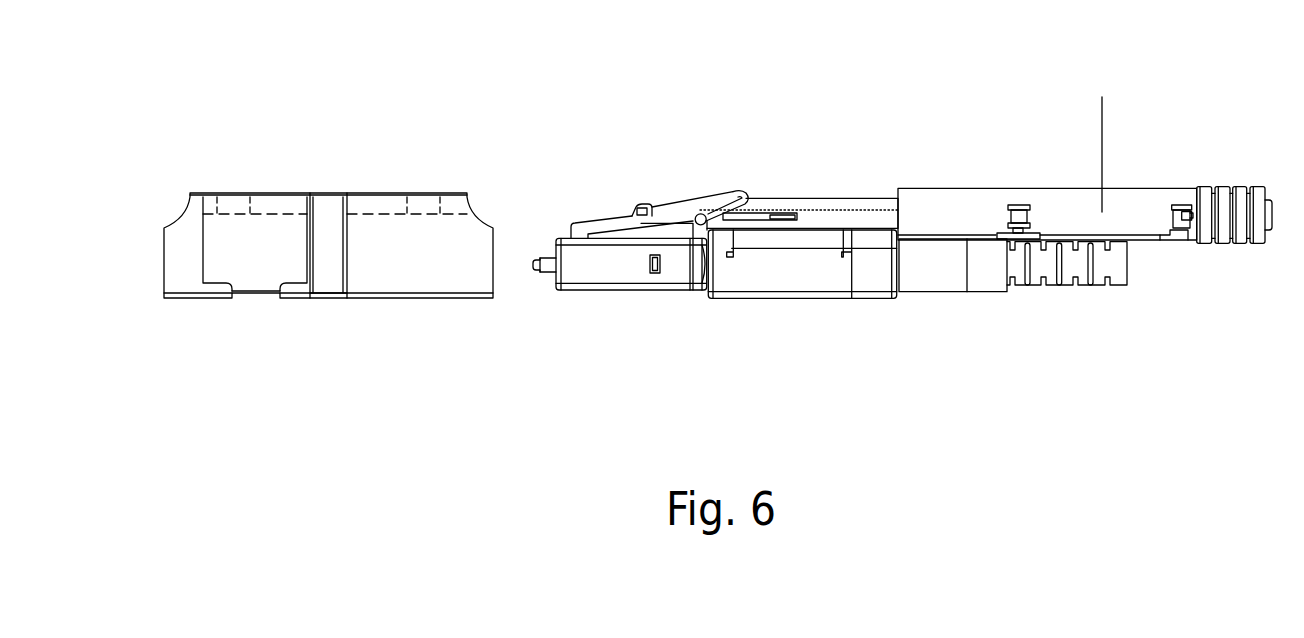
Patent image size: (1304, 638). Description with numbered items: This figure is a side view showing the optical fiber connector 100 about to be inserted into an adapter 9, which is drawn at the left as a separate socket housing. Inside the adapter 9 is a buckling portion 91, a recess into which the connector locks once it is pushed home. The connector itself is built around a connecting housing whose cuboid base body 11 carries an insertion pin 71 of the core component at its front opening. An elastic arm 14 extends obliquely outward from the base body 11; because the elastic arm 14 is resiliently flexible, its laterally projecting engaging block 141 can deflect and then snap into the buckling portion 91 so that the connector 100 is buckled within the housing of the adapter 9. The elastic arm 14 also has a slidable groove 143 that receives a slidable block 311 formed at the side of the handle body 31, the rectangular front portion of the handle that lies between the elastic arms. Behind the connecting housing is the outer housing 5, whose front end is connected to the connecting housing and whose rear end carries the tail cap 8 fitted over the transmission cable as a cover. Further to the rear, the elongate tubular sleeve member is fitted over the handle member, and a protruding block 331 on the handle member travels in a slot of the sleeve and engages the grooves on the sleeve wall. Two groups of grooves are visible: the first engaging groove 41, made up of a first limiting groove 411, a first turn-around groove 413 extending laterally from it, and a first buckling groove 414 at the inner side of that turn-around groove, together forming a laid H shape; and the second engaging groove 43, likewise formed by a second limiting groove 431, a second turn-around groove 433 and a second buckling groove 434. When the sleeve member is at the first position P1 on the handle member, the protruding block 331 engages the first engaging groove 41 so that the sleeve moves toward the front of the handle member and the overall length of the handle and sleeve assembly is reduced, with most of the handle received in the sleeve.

The optical fiber connector 100 is at (853, 72).
The adapter 9 is at (327, 218).
The buckling portion 91 is at (440, 205).
The insertion pin 71 is at (545, 265).
The base body 11 is at (615, 265).
The elastic arm 14 is at (693, 203).
The engaging block 141 is at (645, 208).
The slidable groove 143 is at (738, 192).
The handle body 31 is at (813, 205).
The slidable block 311 is at (706, 227).
The outer housing 5 is at (783, 272).
The tail cap 8 is at (983, 280).
The second engaging groove 43 is at (1018, 205).
The second limiting groove 431 is at (1028, 235).
The second turn-around groove 433 is at (1008, 228).
The second buckling groove 434 is at (1028, 203).
The first engaging groove 41 is at (1182, 203).
The first limiting groove 411 is at (1177, 240).
The first turn-around groove 413 is at (1173, 226).
The first buckling groove 414 is at (1190, 213).
The protruding block 331 is at (1190, 221).
The first position P1 is at (1102, 136).